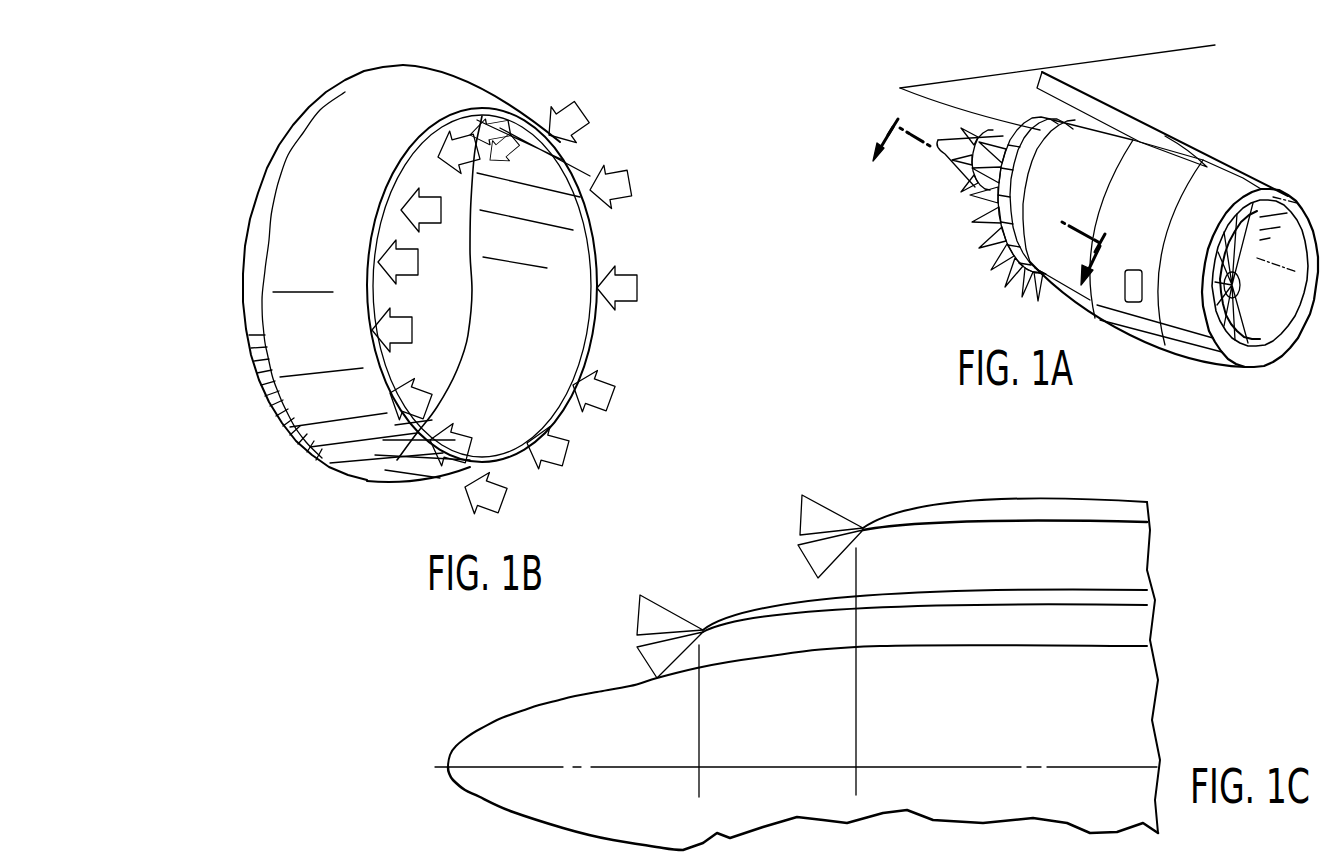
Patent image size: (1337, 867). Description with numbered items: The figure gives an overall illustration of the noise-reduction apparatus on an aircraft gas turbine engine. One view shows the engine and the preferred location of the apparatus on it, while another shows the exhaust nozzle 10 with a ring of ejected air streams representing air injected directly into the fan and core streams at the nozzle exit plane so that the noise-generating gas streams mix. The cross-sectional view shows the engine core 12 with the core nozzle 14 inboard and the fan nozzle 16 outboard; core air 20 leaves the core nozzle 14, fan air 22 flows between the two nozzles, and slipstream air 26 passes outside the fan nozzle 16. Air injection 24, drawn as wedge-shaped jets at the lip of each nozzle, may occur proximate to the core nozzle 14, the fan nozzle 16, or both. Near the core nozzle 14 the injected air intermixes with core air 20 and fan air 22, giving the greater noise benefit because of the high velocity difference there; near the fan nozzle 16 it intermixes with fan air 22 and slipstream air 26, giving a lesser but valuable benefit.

In FIG. 1B, the exhaust nozzle 10 is at (342, 450).
In FIG. 1B, the engine core 12 is at (656, 139).
In FIG. 1C, the engine core 12 is at (908, 652).
In FIG. 1C, the core nozzle 14 is at (1137, 597).
In FIG. 1C, the fan nozzle 16 is at (1133, 513).
In FIG. 1C, the core air 20 is at (976, 627).
In FIG. 1C, the fan air 22 is at (968, 561).
In FIG. 1C, the air injection 24 is at (790, 515).
In FIG. 1C, the slipstream air 26 is at (904, 482).